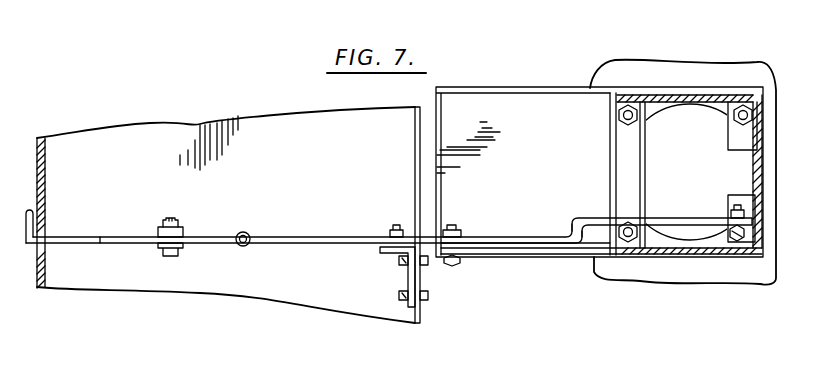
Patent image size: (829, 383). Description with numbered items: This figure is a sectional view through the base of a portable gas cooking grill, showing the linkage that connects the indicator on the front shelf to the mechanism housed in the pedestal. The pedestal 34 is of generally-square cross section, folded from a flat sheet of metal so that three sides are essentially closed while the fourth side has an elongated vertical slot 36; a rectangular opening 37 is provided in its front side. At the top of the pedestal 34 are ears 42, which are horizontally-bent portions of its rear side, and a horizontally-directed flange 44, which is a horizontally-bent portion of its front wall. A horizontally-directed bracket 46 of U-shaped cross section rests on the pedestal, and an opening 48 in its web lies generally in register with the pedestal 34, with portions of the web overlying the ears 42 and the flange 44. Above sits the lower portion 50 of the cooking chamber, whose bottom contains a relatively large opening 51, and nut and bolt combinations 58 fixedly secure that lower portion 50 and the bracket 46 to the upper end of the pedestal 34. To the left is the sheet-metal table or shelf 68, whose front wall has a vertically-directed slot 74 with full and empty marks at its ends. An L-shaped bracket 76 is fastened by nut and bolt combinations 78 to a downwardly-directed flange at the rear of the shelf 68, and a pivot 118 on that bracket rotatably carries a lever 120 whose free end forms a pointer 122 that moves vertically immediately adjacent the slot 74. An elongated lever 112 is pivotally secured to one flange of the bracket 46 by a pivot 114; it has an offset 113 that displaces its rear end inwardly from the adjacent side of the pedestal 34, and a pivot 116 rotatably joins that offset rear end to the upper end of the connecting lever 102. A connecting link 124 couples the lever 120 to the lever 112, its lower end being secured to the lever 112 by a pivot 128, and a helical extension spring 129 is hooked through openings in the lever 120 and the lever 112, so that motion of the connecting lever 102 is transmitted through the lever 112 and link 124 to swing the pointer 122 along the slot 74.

The pedestal 34 is at (674, 255).
The elongated vertical slot 36 is at (762, 158).
The rectangular opening 37 is at (609, 152).
The ears 42 is at (729, 148).
The horizontally-directed flange 44 is at (637, 180).
The horizontally-directed bracket 46 is at (512, 92).
The opening 48 is at (706, 245).
The lower portion of the cooking chamber 50 is at (691, 57).
The opening 51 is at (661, 108).
The nut and bolt combinations 58 is at (614, 118).
The table or shelf 68 is at (201, 122).
The vertically-directed slot 74 is at (48, 250).
The L-shaped bracket 76 is at (382, 250).
The nut and bolt combinations 78 is at (400, 262).
The connecting lever 102 is at (748, 245).
The elongated lever 112 is at (277, 234).
The offset 113 is at (574, 236).
The pivot 114 is at (454, 263).
The pivot 116 is at (737, 245).
The pivot 118 is at (396, 224).
The lever 120 is at (113, 245).
The pointer 122 is at (55, 190).
The connecting link 124 is at (181, 224).
The pivot 128 is at (167, 218).
The helical extension spring 129 is at (243, 248).